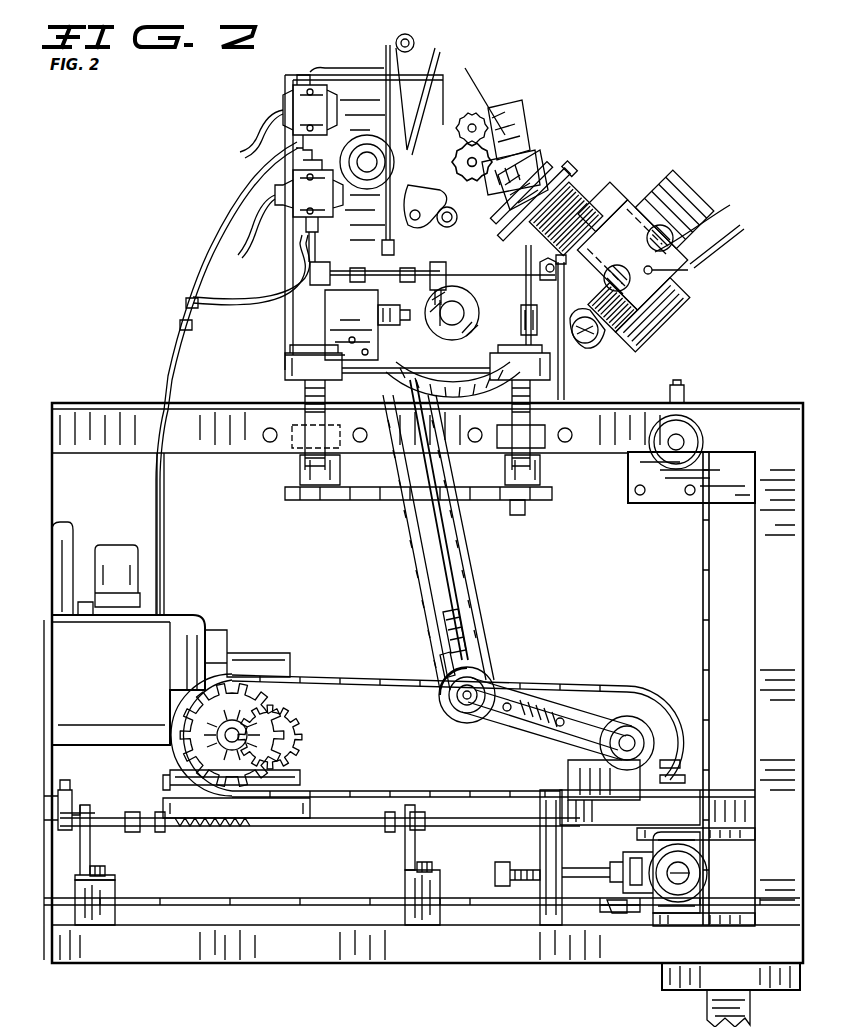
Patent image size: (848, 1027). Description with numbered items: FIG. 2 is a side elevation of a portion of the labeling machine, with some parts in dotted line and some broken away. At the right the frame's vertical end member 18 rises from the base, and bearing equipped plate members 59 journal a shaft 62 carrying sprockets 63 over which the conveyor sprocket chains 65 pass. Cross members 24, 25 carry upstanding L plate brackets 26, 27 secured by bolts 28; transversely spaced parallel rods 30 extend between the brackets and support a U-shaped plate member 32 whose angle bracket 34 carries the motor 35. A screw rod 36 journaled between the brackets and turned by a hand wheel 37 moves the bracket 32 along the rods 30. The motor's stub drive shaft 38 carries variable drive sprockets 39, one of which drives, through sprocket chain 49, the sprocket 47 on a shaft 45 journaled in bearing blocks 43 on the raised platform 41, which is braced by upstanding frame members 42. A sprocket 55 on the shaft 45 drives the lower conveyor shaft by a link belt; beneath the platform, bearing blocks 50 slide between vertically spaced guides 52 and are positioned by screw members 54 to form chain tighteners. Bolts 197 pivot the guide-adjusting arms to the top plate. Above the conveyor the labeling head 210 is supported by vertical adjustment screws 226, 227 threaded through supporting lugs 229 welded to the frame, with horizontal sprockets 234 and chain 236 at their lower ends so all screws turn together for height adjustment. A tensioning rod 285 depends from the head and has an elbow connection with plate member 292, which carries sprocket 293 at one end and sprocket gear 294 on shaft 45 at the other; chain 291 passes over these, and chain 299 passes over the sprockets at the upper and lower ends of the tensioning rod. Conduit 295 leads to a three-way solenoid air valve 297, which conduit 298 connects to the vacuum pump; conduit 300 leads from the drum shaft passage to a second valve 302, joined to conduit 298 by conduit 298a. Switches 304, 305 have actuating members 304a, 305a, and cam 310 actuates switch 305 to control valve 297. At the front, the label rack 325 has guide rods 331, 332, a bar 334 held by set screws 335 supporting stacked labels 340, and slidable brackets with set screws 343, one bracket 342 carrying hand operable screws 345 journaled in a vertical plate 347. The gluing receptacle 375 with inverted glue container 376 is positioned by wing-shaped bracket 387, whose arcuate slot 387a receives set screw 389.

The end member 18 is at (777, 785).
The cross member 24 is at (418, 928).
The cross member 25 is at (96, 920).
The L plate bracket 26 is at (88, 852).
The L plate bracket 27 is at (413, 845).
The bolt 28 is at (103, 865).
The rod 30 is at (286, 826).
The U-shaped plate member 32 is at (158, 805).
The angle bracket 34 is at (292, 778).
The motor 35 is at (171, 633).
The screw rod 36 is at (190, 828).
The hand wheel 37 is at (65, 800).
The stub drive shaft 38 is at (275, 725).
The variable drive sprocket 39 is at (300, 745).
The platform 41 is at (657, 807).
The supporting frame member 42 is at (545, 825).
The bearing block 43 is at (568, 776).
The shaft 45 is at (640, 741).
The sprocket 47 is at (648, 710).
The sprocket chain 49 is at (412, 797).
The bearing block 50 is at (700, 903).
The guide 52 is at (740, 832).
The screw member 54 is at (510, 866).
The sprocket 55 is at (700, 870).
The plate member 59 is at (691, 477).
The shaft 62 is at (690, 880).
The sprocket 63 is at (705, 440).
The sprocket chain 65 is at (709, 580).
The bolt 197 is at (676, 387).
The labeling head 210 is at (484, 91).
The vertical adjustment screw 226 is at (330, 470).
The vertical adjustment screw 227 is at (538, 470).
The supporting lug 229 is at (290, 440).
The sprocket 234 is at (288, 490).
The sprocket chain 236 is at (350, 505).
The tensioning rod 285 is at (445, 548).
The sprocket chain 291 is at (495, 680).
The plate member 292 is at (530, 738).
The sprocket 293 is at (455, 722).
The sprocket gear 294 is at (690, 766).
The conduit 295 is at (383, 60).
The air valve 297 is at (296, 95).
The conduit 298 is at (178, 346).
The conduit 298a is at (258, 296).
The sprocket chain 299 is at (458, 572).
The conduit 300 is at (458, 218).
The air valve 302 is at (283, 192).
The electrical switch 304 is at (312, 328).
The switch actuating member 304a is at (405, 300).
The electrical switch 305 is at (320, 320).
The switch actuating member 305a is at (403, 328).
The cam 310 is at (453, 379).
The label rack 325 is at (646, 160).
The guide rod 331 is at (575, 215).
The guide rod 332 is at (588, 348).
The bar 334 is at (540, 279).
The set screw 335 is at (620, 212).
The label 340 is at (648, 320).
The bracket 342 is at (730, 208).
The set screw 343 is at (710, 262).
The hand operable screw 345 is at (652, 226).
The plate 347 is at (700, 205).
The receptacle 375 is at (535, 160).
The container 376 is at (518, 125).
The wing-shaped bracket 387 is at (405, 222).
The arcuate slot 387a is at (476, 90).
The set screw 389 is at (437, 48).